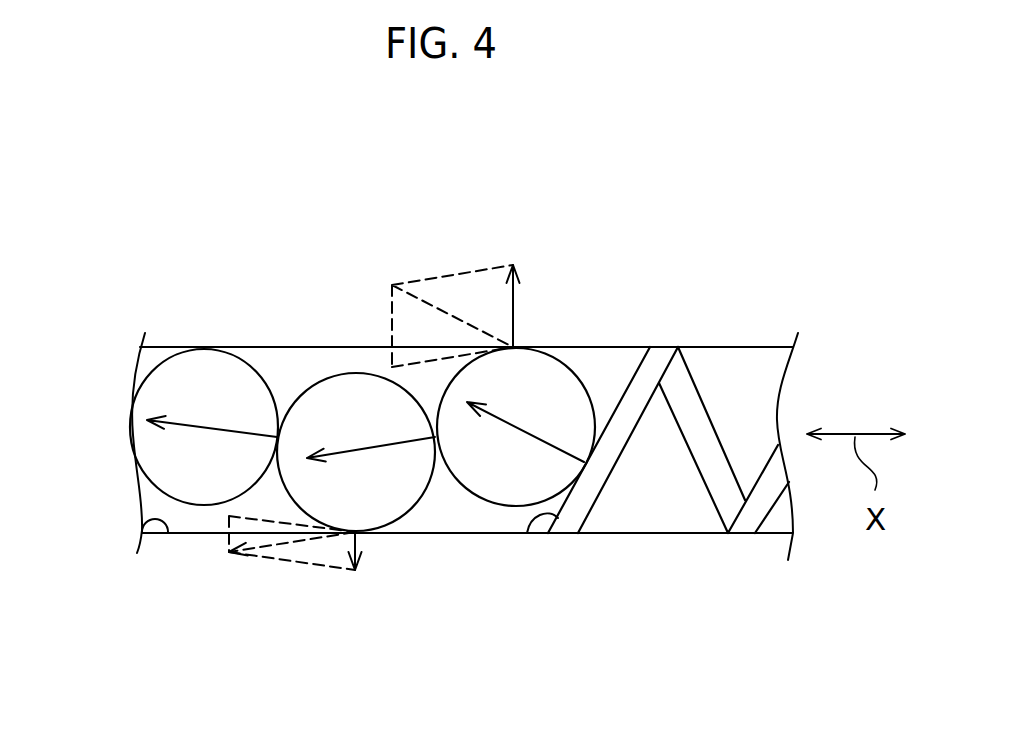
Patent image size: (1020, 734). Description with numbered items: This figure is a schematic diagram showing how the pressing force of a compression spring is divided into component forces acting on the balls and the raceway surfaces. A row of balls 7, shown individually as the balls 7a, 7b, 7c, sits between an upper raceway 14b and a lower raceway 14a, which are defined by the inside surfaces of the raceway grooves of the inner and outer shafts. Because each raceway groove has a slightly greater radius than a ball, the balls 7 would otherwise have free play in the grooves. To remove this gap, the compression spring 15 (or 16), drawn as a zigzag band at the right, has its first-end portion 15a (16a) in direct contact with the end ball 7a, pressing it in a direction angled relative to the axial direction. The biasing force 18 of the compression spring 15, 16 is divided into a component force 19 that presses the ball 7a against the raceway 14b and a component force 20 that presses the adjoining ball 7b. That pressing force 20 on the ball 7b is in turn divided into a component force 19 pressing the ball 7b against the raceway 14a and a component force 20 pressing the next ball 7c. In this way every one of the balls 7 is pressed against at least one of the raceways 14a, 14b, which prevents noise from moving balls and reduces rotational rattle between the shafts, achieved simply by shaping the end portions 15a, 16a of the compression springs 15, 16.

The balls 7 is at (317, 230).
The ball 7a is at (440, 405).
The ball 7b is at (313, 384).
The ball 7c is at (226, 358).
The raceway 14a is at (142, 520).
The raceway 14b is at (140, 352).
The compression spring 15 is at (681, 396).
The compression spring 16 is at (687, 405).
The first-end portion 15a is at (574, 589).
The first-end portion 16a is at (530, 533).
The biasing force 18 is at (532, 430).
The component force 19 is at (513, 303).
The component force 20 is at (222, 430).